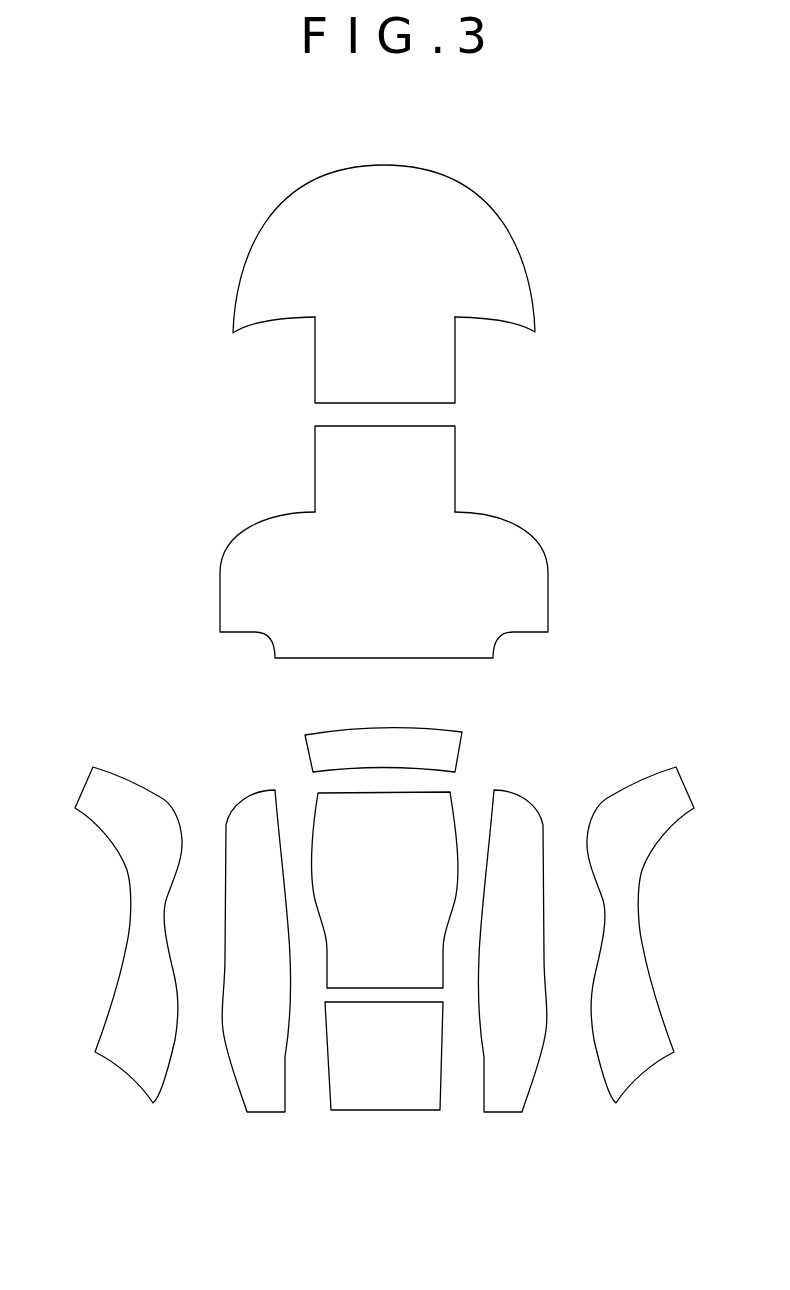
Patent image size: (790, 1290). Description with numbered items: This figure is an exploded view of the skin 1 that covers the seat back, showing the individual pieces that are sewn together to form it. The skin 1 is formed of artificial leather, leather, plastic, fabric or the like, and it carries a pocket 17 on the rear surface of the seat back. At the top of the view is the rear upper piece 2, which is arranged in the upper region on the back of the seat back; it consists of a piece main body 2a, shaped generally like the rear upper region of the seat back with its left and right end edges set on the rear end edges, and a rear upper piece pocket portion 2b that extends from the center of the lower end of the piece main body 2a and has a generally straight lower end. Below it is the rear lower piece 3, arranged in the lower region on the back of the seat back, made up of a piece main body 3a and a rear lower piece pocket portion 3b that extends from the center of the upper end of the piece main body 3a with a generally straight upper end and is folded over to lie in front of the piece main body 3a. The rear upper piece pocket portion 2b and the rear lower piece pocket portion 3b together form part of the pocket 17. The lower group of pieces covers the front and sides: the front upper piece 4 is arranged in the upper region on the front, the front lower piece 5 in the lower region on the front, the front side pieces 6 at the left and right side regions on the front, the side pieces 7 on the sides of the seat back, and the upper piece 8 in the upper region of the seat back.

The skin 1 is at (135, 247).
The rear upper piece 2 is at (265, 222).
The piece main body 2a is at (455, 215).
The rear upper piece pocket portion 2b is at (418, 360).
The rear lower piece 3 is at (233, 540).
The piece main body 3a is at (495, 528).
The rear lower piece pocket portion 3b is at (407, 463).
The pocket 17 is at (382, 394).
The front upper piece 4 is at (323, 810).
The front lower piece 5 is at (338, 1080).
The front side pieces 6 is at (243, 815).
The side pieces 7 is at (117, 820).
The upper piece 8 is at (413, 733).